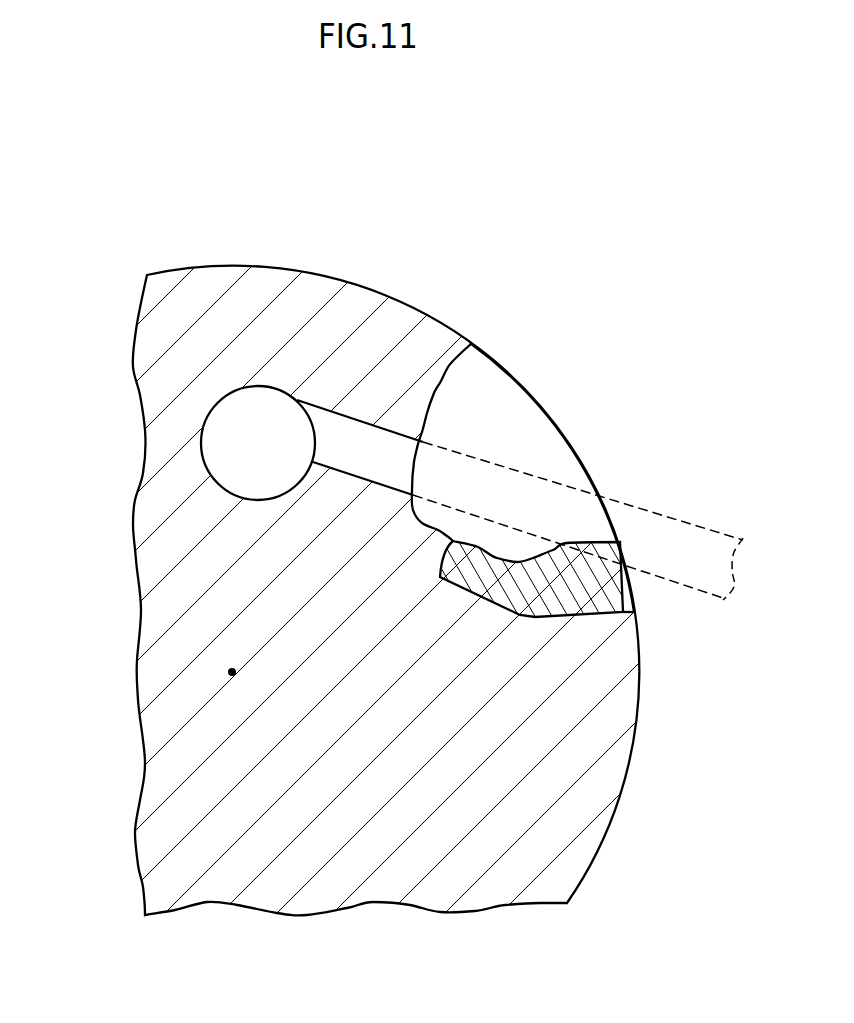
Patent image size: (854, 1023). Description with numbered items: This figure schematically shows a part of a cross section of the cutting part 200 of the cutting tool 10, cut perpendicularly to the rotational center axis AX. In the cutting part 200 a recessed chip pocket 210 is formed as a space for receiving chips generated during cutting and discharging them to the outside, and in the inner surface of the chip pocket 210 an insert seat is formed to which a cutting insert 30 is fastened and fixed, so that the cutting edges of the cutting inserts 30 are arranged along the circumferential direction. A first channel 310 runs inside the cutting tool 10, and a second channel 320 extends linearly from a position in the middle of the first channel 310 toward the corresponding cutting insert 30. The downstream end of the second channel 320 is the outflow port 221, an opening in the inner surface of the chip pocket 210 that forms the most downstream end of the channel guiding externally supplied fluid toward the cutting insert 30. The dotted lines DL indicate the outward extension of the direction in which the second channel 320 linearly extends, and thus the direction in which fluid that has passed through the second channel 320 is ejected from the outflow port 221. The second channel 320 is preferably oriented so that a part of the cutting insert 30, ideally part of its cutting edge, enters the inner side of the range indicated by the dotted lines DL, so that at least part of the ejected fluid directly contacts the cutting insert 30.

The cutting tool 10 is at (497, 228).
The cutting part 200 is at (625, 782).
The chip pocket 210 is at (543, 453).
The outflow port 221 is at (417, 470).
The cutting insert 30 is at (630, 605).
The first channel 310 is at (257, 407).
The second channel 320 is at (343, 410).
The rotational center axis AX is at (228, 672).
The dotted lines DL is at (672, 578).